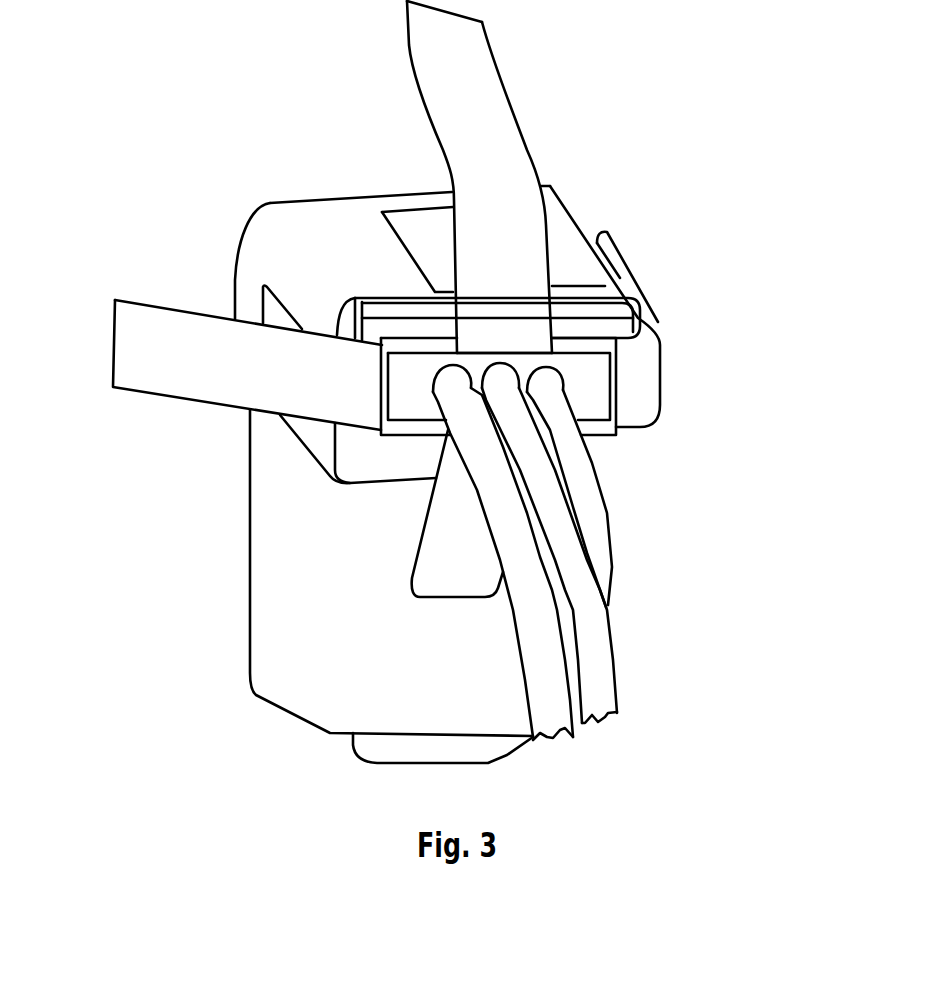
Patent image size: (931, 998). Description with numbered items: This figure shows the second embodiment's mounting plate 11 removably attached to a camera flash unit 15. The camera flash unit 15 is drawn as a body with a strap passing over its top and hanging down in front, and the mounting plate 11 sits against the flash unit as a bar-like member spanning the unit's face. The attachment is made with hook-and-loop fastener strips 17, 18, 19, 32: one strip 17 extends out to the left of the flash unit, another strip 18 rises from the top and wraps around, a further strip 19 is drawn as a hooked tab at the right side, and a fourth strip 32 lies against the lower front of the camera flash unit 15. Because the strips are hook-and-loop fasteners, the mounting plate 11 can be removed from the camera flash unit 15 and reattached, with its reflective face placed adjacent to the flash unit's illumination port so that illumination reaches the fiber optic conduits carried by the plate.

The mounting plate 11 is at (662, 325).
The camera flash unit 15 is at (248, 513).
The hook-and-loop fastener strip 17 is at (113, 339).
The hook-and-loop fastener strip 18 is at (487, 48).
The hook-and-loop fastener strip 19 is at (610, 242).
The hook-and-loop fastener strip 32 is at (407, 590).